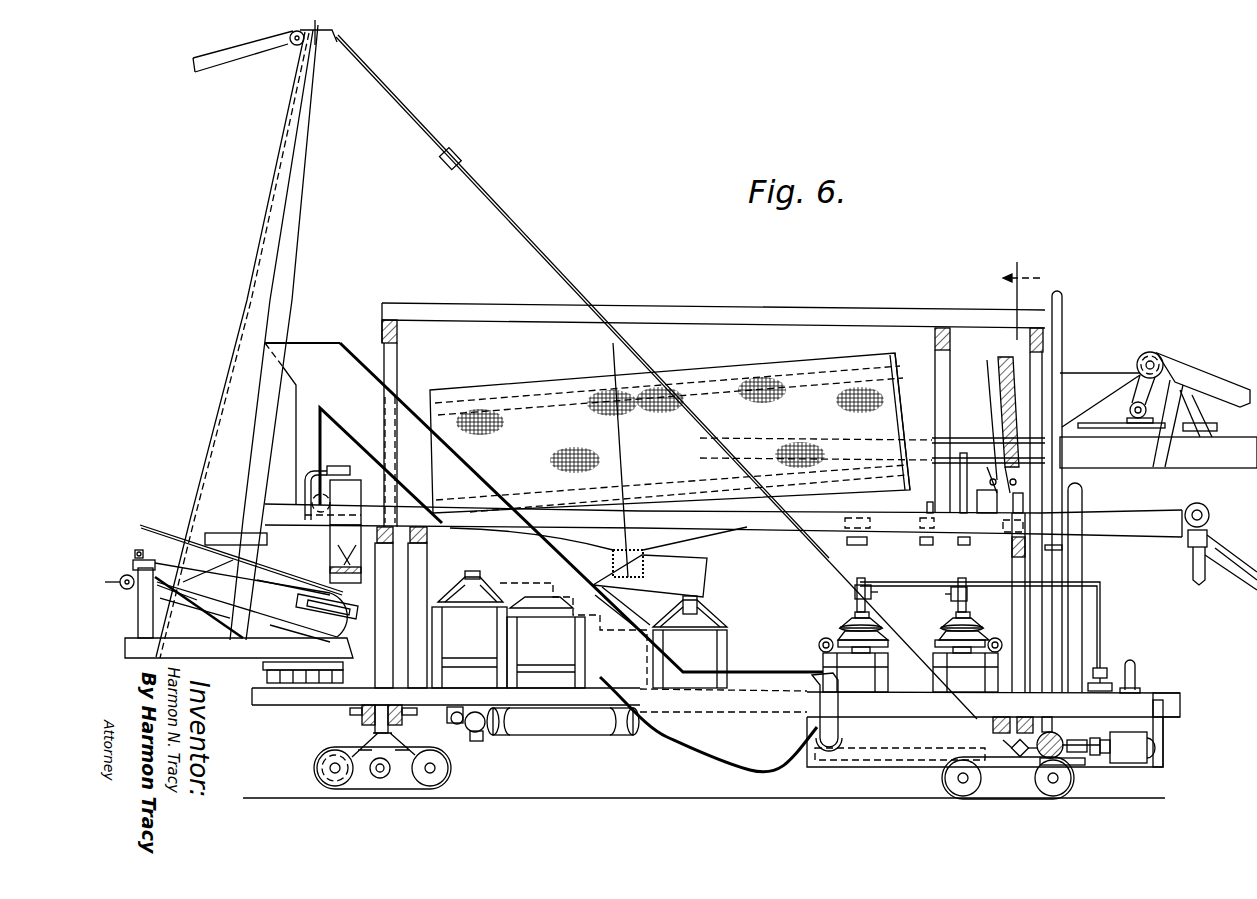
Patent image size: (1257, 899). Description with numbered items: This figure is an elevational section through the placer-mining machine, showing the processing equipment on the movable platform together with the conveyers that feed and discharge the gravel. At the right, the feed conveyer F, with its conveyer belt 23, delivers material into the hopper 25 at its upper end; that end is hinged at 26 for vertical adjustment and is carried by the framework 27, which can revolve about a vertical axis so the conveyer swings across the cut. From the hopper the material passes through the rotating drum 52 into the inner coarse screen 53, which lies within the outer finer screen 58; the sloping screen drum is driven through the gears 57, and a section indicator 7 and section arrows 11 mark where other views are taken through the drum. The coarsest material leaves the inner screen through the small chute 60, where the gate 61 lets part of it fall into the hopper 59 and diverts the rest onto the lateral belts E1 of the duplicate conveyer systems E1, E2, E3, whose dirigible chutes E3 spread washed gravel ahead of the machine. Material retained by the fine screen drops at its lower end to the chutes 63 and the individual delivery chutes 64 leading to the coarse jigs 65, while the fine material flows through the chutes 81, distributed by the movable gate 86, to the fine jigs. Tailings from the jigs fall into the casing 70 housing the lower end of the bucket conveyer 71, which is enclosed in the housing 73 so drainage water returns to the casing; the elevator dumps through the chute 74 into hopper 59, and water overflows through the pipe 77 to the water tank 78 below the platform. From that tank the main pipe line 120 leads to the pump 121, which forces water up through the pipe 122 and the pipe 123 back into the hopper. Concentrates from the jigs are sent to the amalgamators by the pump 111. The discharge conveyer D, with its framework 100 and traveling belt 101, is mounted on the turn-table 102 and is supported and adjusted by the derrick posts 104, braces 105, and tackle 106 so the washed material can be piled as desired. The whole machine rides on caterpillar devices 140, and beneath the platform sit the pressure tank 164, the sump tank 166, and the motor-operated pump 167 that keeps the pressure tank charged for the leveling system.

The section line 7- 7 is at (1029, 301).
The pipe 11 is at (607, 366).
The conveyer belt 23 is at (1196, 368).
The hopper 25 is at (1113, 380).
The hinge 26 is at (1088, 587).
The framework 27 is at (1158, 452).
The rotating drum 52 is at (908, 421).
The inner coarse screen 53 is at (417, 403).
The gears 57 is at (1003, 358).
The outer finer screen 58 is at (513, 388).
The hopper 59 is at (323, 554).
The small chute 60 is at (356, 572).
The gate 61 is at (333, 522).
The chutes 63 is at (400, 570).
The individual delivery chutes 64 is at (465, 578).
The coarse jigs 65 is at (579, 647).
The box or casing 70 is at (711, 743).
The bucket conveyer 71 is at (343, 372).
The housing 73 is at (363, 413).
The chute 74 is at (300, 428).
The pipe 77 is at (836, 716).
The water tank 78 is at (912, 740).
The chutes 81 is at (647, 567).
The movable gate 86 is at (752, 503).
The frame work 100 is at (130, 576).
The traveling belt 101 is at (142, 526).
The turn-table 102 is at (239, 621).
The derrick posts 104 is at (290, 228).
The braces 105 is at (246, 312).
The tackle 106 is at (237, 60).
The pump 111 is at (1102, 670).
The main pipe line 120 is at (1012, 746).
The pump 121 is at (1030, 757).
The pipe 122 is at (1050, 650).
The pipe 123 is at (1075, 340).
The caterpillar devices 140 is at (316, 752).
The pressure tank 164 is at (548, 722).
The sump tank 166 is at (623, 725).
The motor operated pump 167 is at (477, 733).
The discharge conveyer D is at (166, 532).
The lateral belts E1 is at (381, 463).
The conveyer system element E2 is at (1143, 512).
The dirigible chute E3 is at (1221, 546).
The feed conveyer F is at (1226, 378).